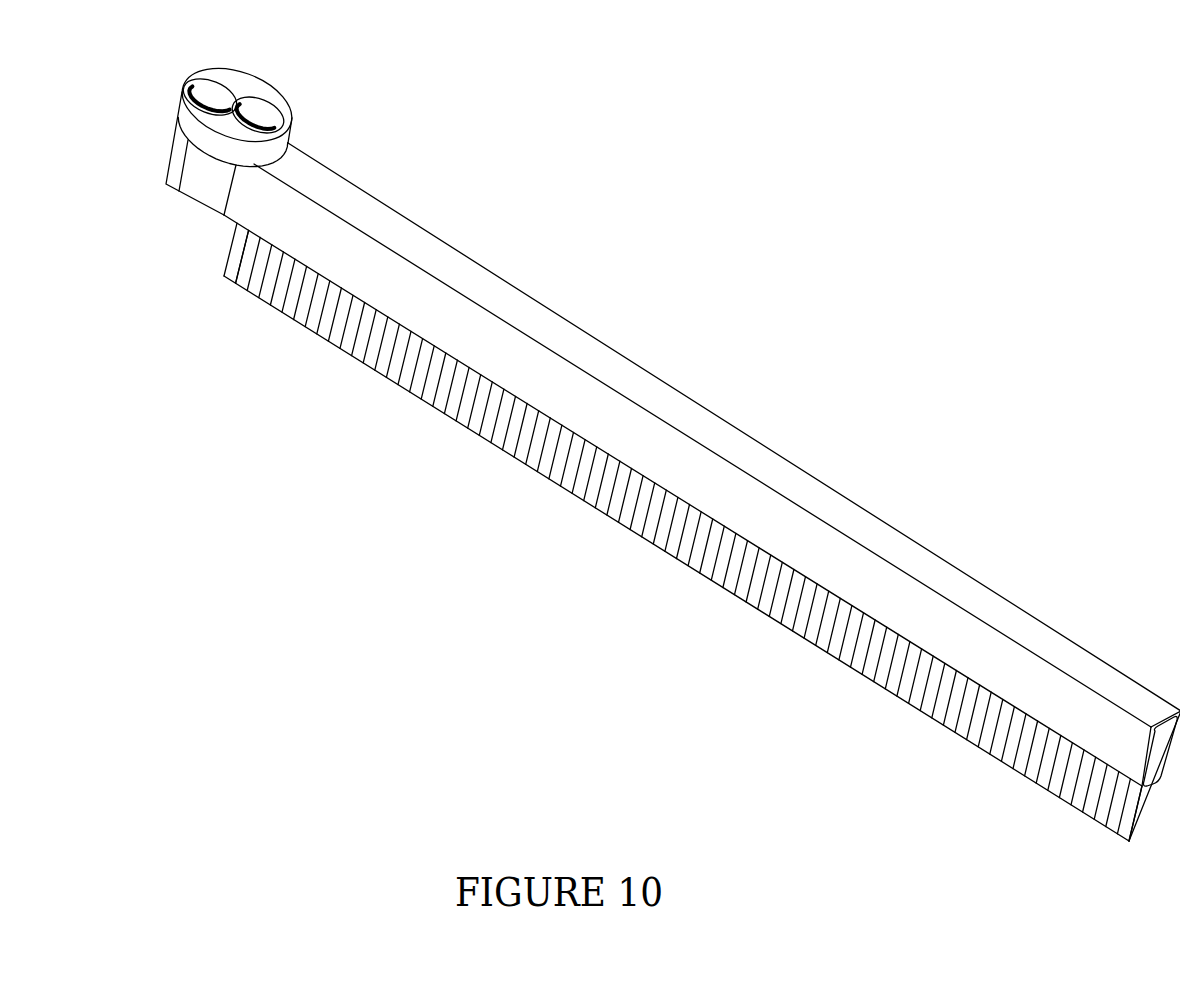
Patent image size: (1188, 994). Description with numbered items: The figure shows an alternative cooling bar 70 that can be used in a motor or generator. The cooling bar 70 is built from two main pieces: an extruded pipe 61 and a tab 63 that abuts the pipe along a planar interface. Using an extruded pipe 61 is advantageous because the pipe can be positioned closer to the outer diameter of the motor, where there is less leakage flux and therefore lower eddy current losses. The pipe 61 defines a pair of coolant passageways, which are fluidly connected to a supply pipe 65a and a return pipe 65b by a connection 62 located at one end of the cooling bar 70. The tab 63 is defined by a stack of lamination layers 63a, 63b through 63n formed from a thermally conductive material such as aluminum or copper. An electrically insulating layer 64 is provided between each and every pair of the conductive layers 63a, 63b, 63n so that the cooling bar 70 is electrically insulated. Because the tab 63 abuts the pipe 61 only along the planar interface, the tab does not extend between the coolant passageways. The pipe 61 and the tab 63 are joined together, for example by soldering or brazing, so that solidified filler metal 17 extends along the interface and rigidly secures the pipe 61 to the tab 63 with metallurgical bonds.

The solidified filler metal 17 is at (1143, 778).
The extruded pipe 61 is at (315, 230).
The connection 62 is at (185, 175).
The tab 63 is at (785, 660).
The lamination layer 63a is at (223, 268).
The lamination layer 63b is at (237, 282).
The lamination layer 63n is at (1115, 823).
The electrically insulating layer 64 is at (233, 250).
The supply pipe 65a is at (245, 102).
The return pipe 65b is at (187, 77).
The cooling bar 70 is at (651, 452).